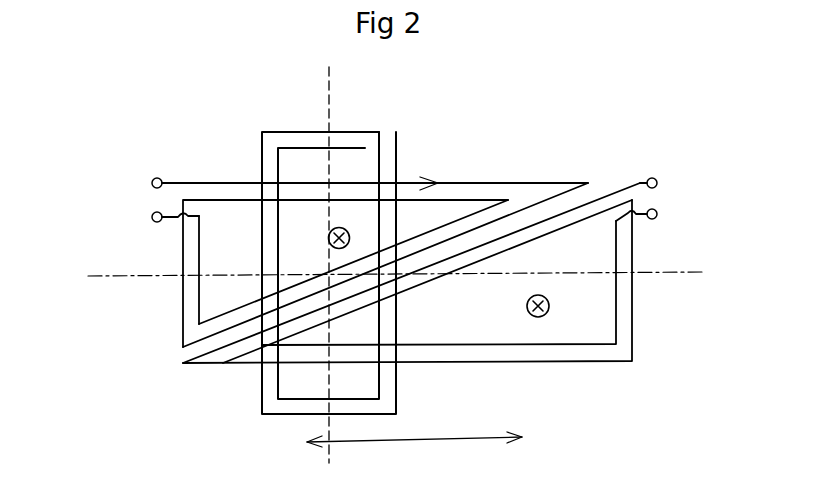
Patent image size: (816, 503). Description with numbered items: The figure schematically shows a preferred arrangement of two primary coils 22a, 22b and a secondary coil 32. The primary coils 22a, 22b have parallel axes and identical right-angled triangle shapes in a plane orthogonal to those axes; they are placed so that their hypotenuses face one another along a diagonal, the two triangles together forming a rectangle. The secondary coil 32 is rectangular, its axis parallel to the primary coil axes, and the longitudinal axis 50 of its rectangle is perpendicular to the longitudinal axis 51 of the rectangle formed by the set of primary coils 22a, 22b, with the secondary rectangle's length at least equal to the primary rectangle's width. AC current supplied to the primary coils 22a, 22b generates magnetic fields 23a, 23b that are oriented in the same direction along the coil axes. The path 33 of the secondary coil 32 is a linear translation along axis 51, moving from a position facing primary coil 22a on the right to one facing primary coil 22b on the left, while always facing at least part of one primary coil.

The longitudinal axis of the rectangle formed by the secondary coil 50 is at (324, 99).
The longitudinal axis of the rectangle formed by the set of two primary coils 51 is at (90, 275).
The secondary coil 32 is at (364, 131).
The primary coil 22a is at (633, 303).
The primary coil 22b is at (180, 308).
The magnetic field 23a is at (541, 318).
The magnetic field 23b is at (340, 227).
The path of the secondary circuit 33 is at (405, 441).